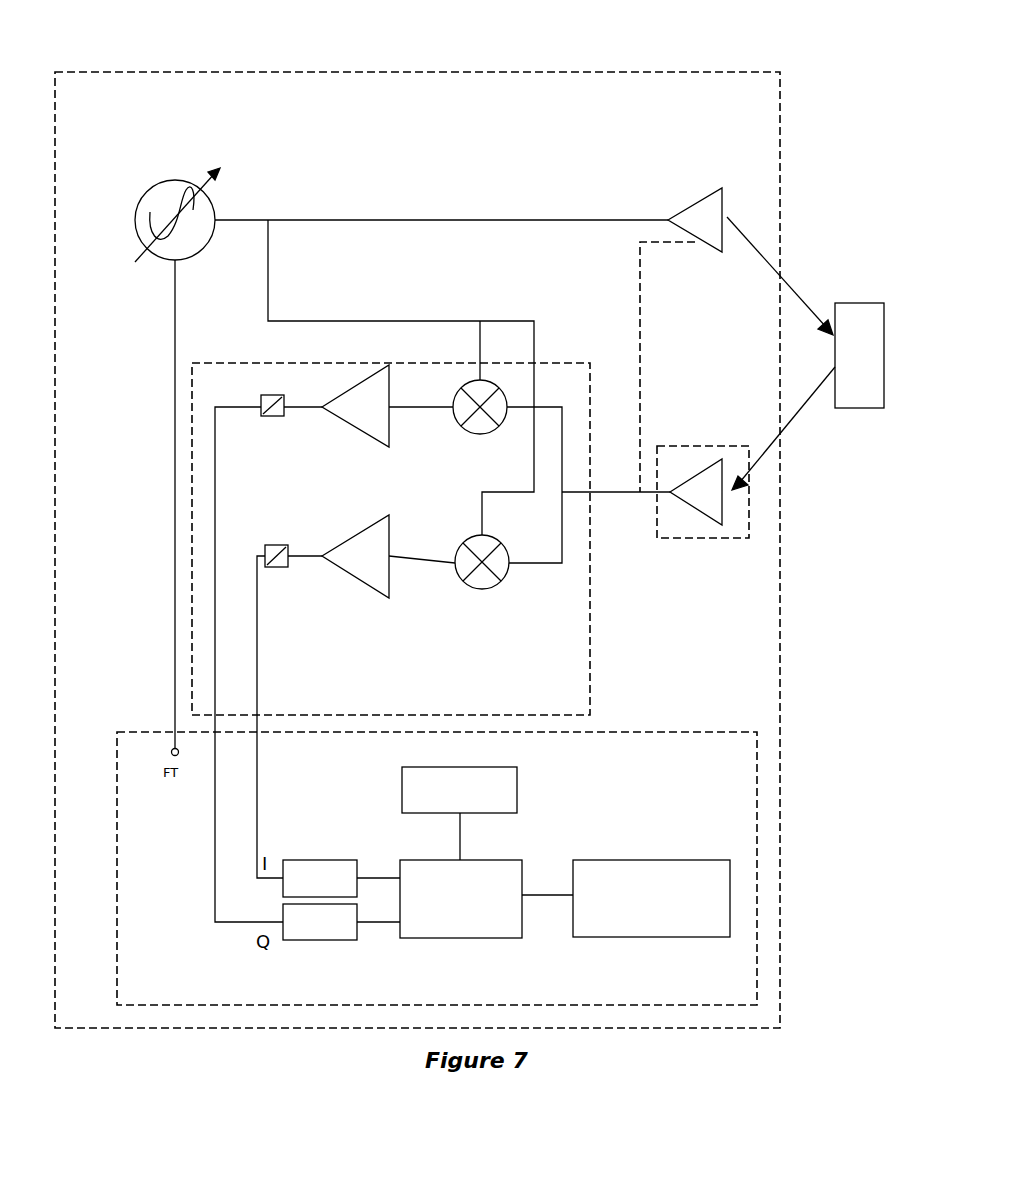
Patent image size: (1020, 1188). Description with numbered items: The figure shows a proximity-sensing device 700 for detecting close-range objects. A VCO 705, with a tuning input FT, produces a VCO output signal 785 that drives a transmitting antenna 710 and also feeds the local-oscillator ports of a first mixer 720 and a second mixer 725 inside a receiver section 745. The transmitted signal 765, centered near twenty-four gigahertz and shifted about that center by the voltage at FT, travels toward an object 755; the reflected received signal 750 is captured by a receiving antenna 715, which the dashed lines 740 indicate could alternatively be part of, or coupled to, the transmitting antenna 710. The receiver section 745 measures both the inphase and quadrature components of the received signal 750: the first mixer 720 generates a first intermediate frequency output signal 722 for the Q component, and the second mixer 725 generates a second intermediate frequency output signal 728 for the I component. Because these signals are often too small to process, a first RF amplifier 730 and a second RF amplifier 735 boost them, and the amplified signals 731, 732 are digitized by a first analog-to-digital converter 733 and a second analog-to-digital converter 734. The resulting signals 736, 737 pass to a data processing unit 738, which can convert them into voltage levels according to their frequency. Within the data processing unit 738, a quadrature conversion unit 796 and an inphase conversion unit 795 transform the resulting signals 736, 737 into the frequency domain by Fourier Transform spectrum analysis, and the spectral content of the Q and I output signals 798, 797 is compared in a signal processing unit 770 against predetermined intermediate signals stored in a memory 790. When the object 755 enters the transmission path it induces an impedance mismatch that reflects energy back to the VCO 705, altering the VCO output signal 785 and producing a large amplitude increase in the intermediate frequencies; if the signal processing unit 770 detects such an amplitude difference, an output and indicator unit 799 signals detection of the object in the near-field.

The proximity-sensing device 700 is at (482, 65).
The VCO 705 is at (190, 186).
The transmitting antenna 710 is at (670, 187).
The receiving antenna 715 is at (708, 527).
The first mixer 720 is at (462, 433).
The first intermediate frequency output signal 722 is at (419, 432).
The second mixer 725 is at (459, 544).
The second intermediate frequency output signal 728 is at (446, 602).
The first RF amplifier 730 is at (330, 390).
The amplified signal 731 is at (305, 439).
The amplified signal 732 is at (298, 524).
The first analog-to-digital converter 733 is at (258, 439).
The second analog-to-digital converter 734 is at (303, 593).
The second RF amplifier 735 is at (376, 592).
The resulting signal 736 is at (174, 828).
The resulting signal 737 is at (304, 761).
The data processing unit 738 is at (437, 837).
The dashed lines 740 is at (694, 390).
The receiver section 745 is at (431, 539).
The received signal 750 is at (785, 431).
The object 755 is at (866, 392).
The transmitted signal 765 is at (789, 271).
The signal processing unit 770 is at (490, 864).
The VCO output signal 785 is at (376, 269).
The memory 790 is at (491, 795).
The inphase conversion unit 795 is at (329, 845).
The quadrature conversion unit 796 is at (322, 954).
The I output signal 797 is at (390, 853).
The Q output signal 798 is at (399, 960).
The output and indicator unit 799 is at (651, 863).